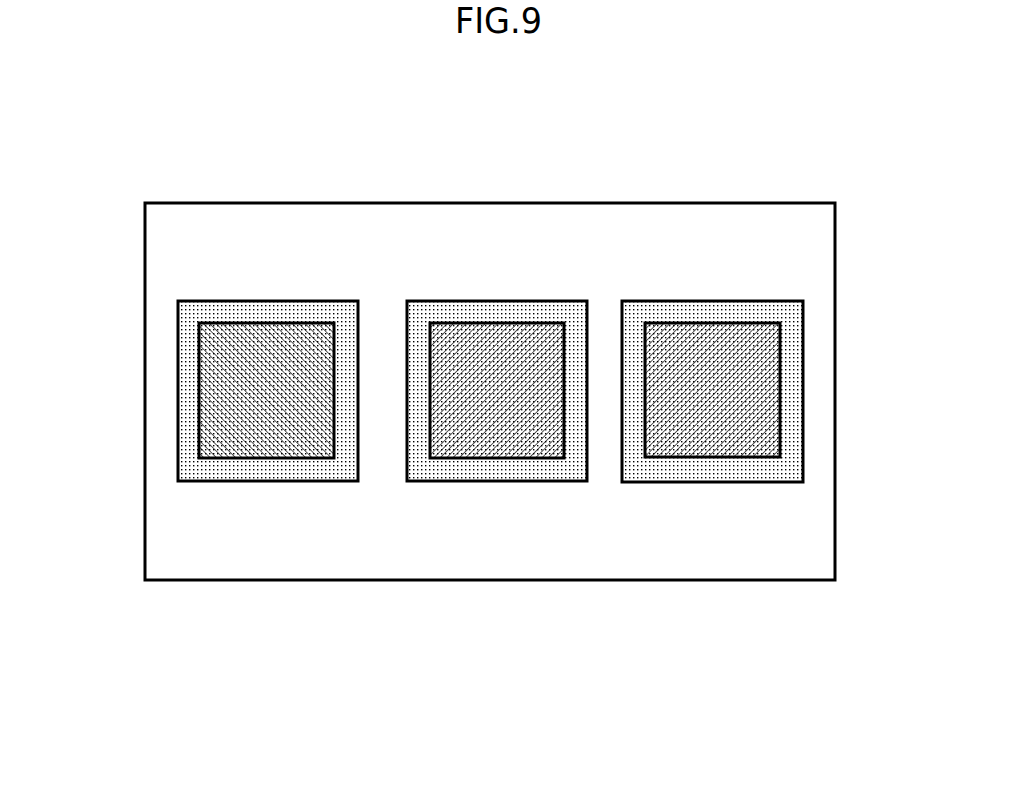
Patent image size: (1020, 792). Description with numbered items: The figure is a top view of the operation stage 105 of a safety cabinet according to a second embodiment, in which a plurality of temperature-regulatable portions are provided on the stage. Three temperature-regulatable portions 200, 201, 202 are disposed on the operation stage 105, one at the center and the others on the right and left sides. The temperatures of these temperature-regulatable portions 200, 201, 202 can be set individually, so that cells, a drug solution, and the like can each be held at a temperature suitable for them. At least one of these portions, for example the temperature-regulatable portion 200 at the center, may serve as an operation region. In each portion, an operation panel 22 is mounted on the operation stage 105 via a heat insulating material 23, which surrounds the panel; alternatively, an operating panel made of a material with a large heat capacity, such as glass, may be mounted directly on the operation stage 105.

The operation stage 105 is at (303, 582).
The temperature-regulatable portion 200 is at (420, 272).
The temperature-regulatable portion 201 is at (790, 291).
The temperature-regulatable portion 202 is at (163, 287).
The operation panel 22 is at (297, 328).
The heat insulating material 23 is at (237, 312).